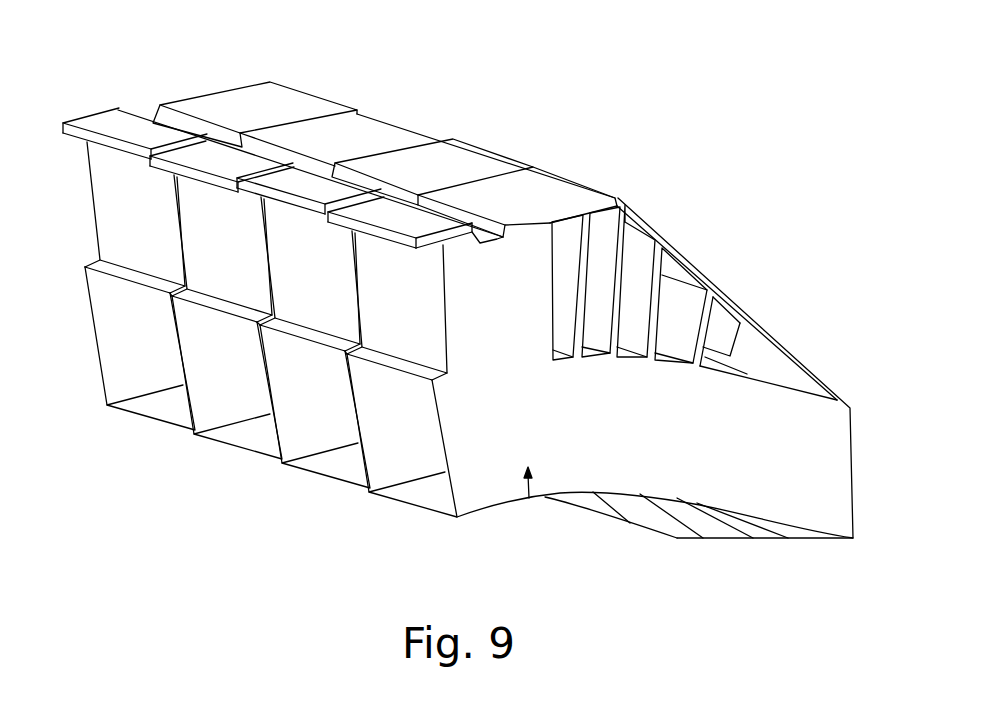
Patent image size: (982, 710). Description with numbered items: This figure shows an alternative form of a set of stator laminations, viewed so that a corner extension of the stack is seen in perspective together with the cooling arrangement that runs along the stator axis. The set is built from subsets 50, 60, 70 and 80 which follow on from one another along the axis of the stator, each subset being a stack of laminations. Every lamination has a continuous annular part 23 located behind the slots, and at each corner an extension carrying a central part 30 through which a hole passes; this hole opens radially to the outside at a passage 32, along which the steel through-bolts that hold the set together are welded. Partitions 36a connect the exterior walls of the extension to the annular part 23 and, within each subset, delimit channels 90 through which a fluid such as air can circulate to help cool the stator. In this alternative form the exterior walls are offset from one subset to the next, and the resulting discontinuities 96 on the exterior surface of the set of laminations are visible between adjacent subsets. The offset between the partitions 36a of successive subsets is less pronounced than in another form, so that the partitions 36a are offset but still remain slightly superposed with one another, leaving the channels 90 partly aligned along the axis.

The annular part 23 is at (497, 478).
The central part 30 is at (577, 182).
The passage 32 is at (497, 173).
The partition 36a is at (633, 229).
The subset 50 is at (417, 505).
The subset 60 is at (453, 134).
The subset 70 is at (363, 197).
The subset 80 is at (298, 88).
The channel 90 is at (530, 500).
The discontinuity 96 is at (331, 119).